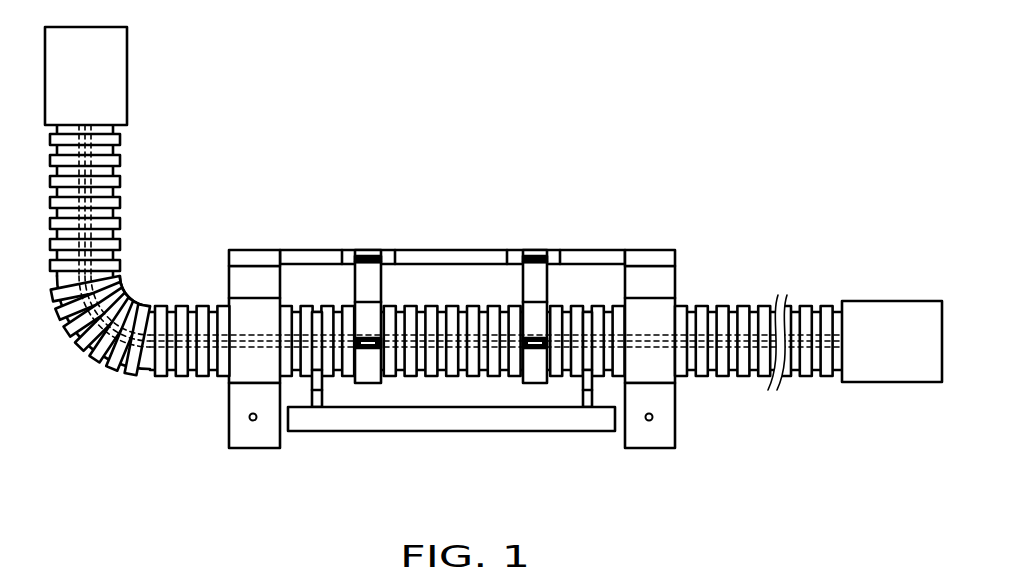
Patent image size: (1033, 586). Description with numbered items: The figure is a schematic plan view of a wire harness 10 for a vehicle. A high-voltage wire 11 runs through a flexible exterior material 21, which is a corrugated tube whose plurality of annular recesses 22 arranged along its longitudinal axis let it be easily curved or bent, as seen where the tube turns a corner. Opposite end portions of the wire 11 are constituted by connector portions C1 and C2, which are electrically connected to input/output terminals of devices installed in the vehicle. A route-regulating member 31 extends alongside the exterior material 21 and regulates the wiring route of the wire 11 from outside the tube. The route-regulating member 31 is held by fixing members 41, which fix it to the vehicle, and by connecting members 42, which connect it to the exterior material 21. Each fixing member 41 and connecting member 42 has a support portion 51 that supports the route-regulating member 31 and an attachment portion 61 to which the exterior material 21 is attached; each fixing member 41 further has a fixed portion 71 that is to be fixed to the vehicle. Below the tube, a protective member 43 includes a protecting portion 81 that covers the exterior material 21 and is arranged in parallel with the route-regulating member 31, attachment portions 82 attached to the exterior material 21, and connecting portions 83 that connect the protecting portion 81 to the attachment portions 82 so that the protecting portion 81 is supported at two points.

The wire harness 10 is at (493, 258).
The wire 11 is at (95, 143).
The exterior material 21 is at (121, 178).
The annular recesses 22 is at (122, 213).
The route-regulating member 31 is at (462, 245).
The fixing member 41 is at (268, 244).
The connecting member 42 is at (384, 243).
The protective member 43 is at (451, 401).
The support portion 51 is at (253, 250).
The attachment portion 61 is at (226, 355).
The fixed portion 71 is at (229, 437).
The protecting portion 81 is at (438, 431).
The attachment portions 82 is at (313, 357).
The connecting portions 83 is at (323, 390).
The connector portion C1 is at (127, 74).
The connector portion C2 is at (890, 301).